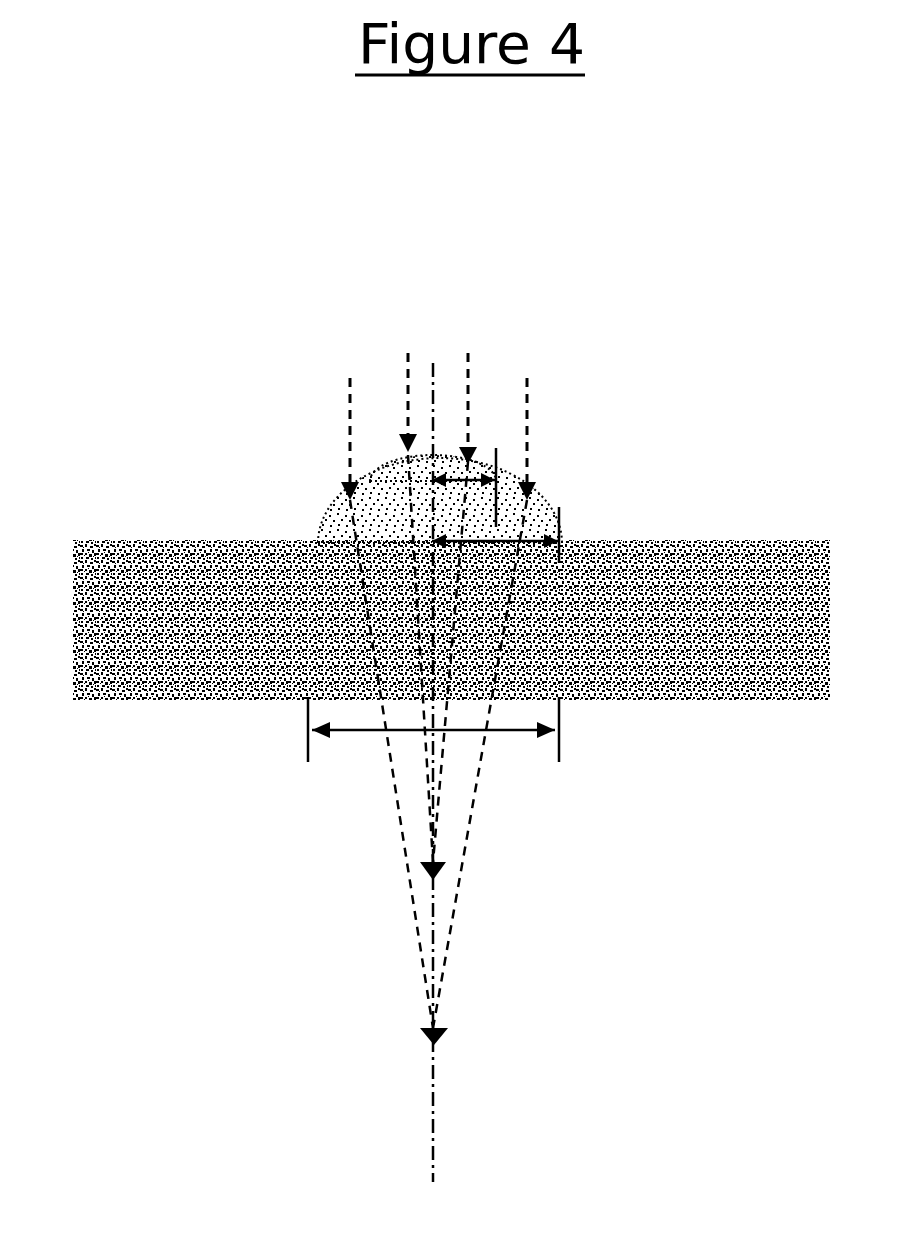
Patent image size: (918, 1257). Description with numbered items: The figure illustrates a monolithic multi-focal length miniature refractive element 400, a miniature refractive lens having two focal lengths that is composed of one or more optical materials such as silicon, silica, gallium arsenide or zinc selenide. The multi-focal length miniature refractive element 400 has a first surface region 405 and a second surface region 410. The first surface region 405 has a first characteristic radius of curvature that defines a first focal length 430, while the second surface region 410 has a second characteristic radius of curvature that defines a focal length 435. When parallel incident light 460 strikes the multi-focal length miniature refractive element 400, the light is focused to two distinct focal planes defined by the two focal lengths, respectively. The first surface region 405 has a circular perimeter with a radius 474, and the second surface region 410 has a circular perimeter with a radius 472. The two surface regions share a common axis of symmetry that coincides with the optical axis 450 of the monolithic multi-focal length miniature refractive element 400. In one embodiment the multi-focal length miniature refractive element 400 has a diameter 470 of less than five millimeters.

The multi-focal length miniature refractive element 400 is at (120, 159).
The first surface region 405 is at (340, 502).
The second surface region 410 is at (400, 467).
The first focal length 430 is at (457, 1022).
The focal length 435 is at (457, 872).
The optical axis 450 is at (432, 1120).
The parallel incident light 460 is at (463, 203).
The diameter 470 is at (372, 730).
The radius 472 is at (607, 316).
The radius 474 is at (652, 460).